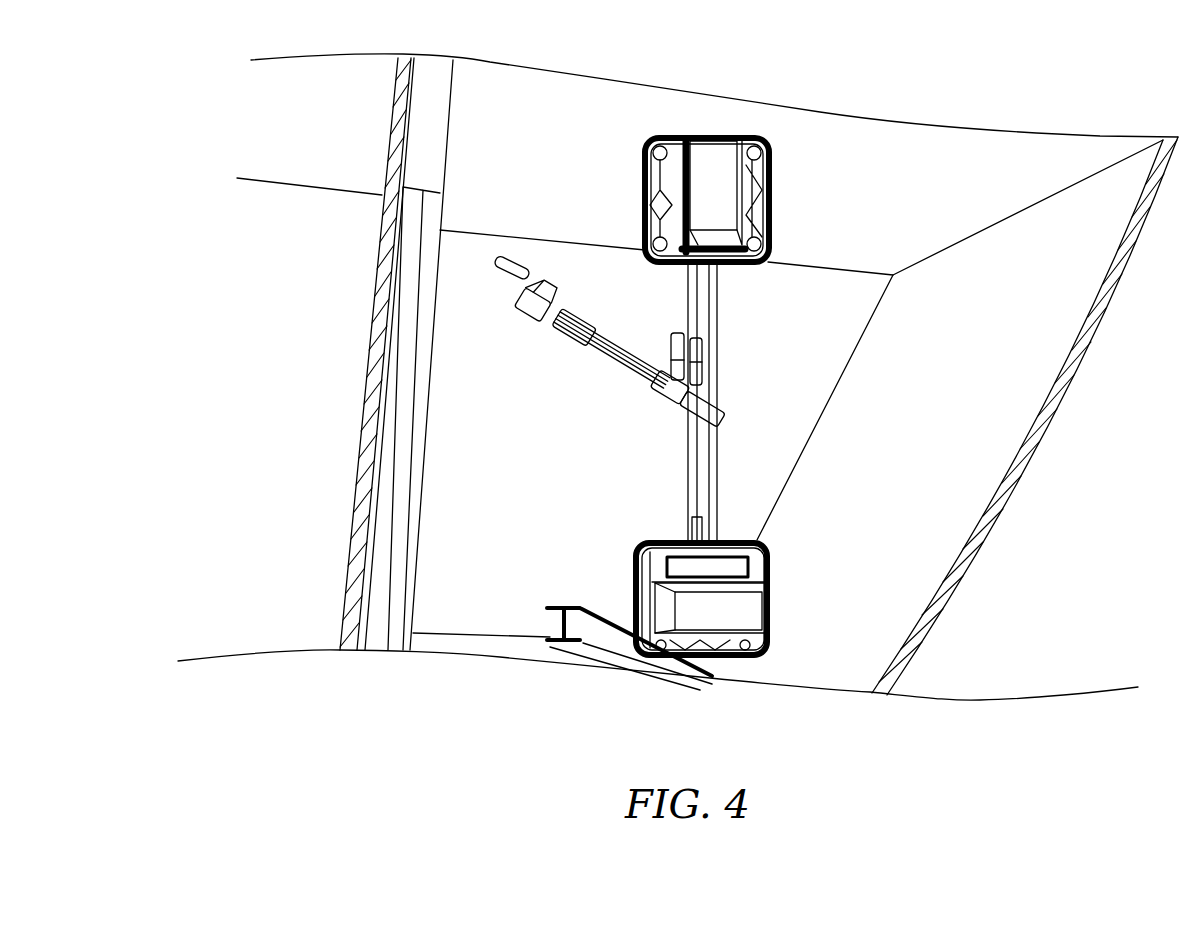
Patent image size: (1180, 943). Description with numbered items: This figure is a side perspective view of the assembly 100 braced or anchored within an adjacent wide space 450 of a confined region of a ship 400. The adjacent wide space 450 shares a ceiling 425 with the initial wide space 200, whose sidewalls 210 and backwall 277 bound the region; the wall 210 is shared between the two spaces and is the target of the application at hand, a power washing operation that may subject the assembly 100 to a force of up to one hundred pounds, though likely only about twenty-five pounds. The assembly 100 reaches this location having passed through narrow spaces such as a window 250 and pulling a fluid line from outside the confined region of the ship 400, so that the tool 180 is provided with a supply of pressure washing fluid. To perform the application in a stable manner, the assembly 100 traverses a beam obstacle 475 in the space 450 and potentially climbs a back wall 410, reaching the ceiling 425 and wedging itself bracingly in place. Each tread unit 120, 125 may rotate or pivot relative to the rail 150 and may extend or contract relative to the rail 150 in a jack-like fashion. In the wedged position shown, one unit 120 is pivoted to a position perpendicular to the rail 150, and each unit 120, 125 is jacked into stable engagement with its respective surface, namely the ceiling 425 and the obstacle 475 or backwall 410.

The assembly 100 is at (668, 304).
The tread unit 120 is at (741, 622).
The tread unit 125 is at (713, 153).
The rail 150 is at (713, 483).
The tool 180 is at (528, 347).
The wide space 200 is at (216, 368).
The sidewalls 210 is at (328, 294).
The window 250 is at (690, 465).
The backwall 277 is at (353, 517).
The ship 400 is at (1064, 509).
The back wall 410 is at (946, 446).
The ceiling 425 is at (332, 136).
The adjacent wide space 450 is at (936, 146).
The beam obstacle 475 is at (557, 627).